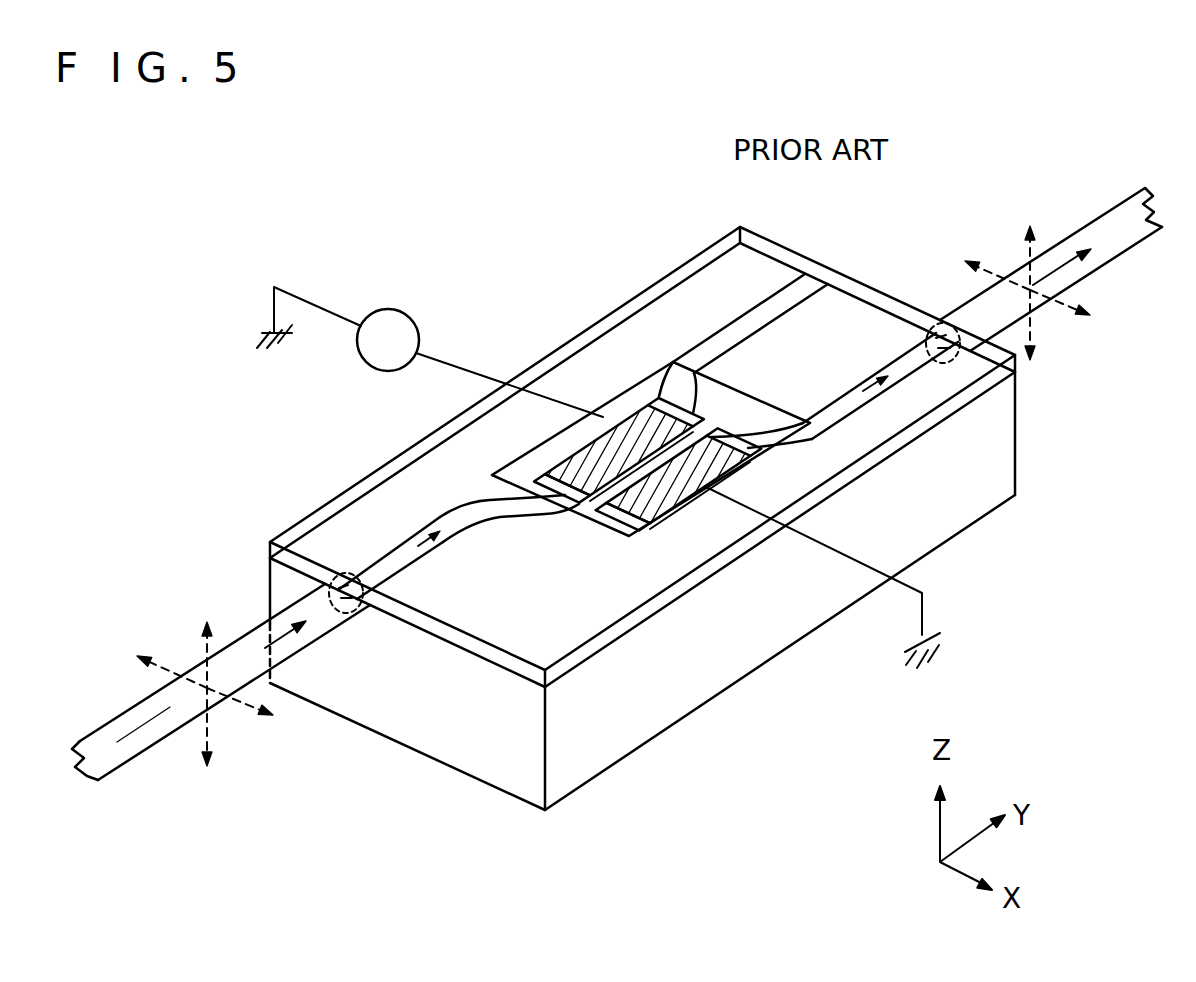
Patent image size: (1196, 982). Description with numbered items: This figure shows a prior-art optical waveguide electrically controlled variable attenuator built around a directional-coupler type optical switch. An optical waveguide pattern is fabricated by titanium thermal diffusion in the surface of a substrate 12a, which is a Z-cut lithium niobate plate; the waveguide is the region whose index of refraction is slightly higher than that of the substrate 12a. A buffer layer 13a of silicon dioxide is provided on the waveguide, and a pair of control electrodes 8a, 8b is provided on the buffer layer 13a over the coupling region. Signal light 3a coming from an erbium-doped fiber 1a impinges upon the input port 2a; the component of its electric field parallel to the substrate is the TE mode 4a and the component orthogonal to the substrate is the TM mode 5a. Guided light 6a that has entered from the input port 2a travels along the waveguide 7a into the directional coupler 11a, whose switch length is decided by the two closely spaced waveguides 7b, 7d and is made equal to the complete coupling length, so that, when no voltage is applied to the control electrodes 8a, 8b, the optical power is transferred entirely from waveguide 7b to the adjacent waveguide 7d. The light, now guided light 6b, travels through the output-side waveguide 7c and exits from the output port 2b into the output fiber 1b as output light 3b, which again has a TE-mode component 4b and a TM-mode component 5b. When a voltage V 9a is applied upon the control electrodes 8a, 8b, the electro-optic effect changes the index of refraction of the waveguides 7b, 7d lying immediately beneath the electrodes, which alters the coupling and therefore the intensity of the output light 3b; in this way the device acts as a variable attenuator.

The input optical fiber 1a is at (157, 742).
The output fiber 1b is at (1135, 255).
The input port 2a is at (327, 590).
The output port 2b is at (935, 322).
The signal light 3a is at (140, 717).
The output light 3b is at (990, 310).
The polarization component arrow (input) 4a is at (270, 720).
The polarization component arrow (output) 4b is at (1087, 320).
The polarization component arrow (input) 5a is at (193, 638).
The polarization component arrow (output) 5b is at (1025, 232).
The guided light 6a is at (400, 560).
The output optical waveguide 6b is at (855, 403).
The optical waveguide 7a is at (405, 540).
The optical waveguide 7b is at (492, 475).
The optical waveguide on the output side 7c is at (803, 423).
The adjacent optical waveguide 7d is at (620, 530).
The control electrode 8a is at (603, 417).
The control electrode 8b is at (685, 505).
The voltage V 9a is at (398, 310).
The directional coupler switch 11a is at (662, 398).
The substrate 12a is at (990, 523).
The buffer layer 13a is at (952, 405).